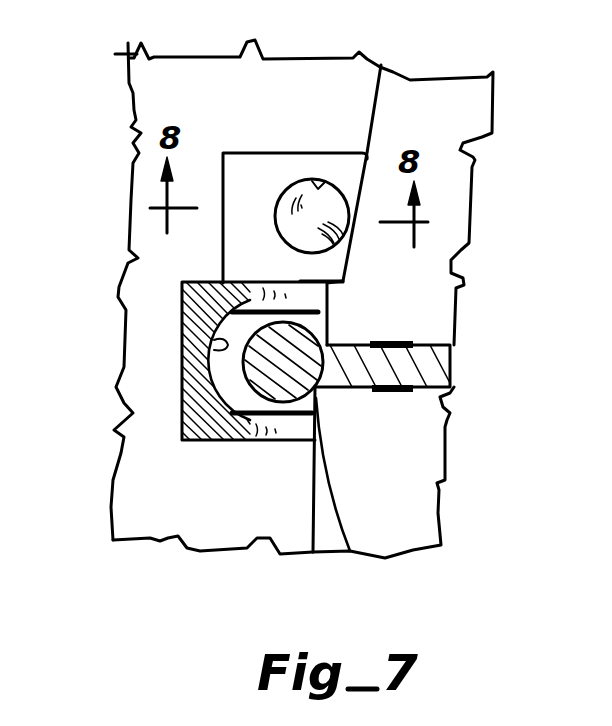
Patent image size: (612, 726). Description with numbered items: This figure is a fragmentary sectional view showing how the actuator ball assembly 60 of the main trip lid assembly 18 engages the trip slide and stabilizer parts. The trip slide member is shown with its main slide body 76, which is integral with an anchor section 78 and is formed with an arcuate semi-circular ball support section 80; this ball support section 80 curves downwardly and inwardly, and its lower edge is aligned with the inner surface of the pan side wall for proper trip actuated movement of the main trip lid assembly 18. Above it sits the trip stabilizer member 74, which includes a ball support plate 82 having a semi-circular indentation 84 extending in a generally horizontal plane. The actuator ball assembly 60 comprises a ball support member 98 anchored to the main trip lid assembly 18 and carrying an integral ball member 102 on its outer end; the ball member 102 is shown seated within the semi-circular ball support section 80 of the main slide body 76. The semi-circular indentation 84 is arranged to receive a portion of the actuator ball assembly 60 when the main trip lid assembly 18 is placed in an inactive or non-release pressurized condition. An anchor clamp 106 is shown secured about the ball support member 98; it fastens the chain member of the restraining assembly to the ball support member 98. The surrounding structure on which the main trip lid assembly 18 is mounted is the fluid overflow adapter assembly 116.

The main trip lid assembly 18 is at (397, 483).
The actuator ball assembly 60 is at (414, 331).
The trip stabilizer member 74 is at (245, 214).
The main slide body 76 is at (187, 440).
The anchor section 78 is at (287, 443).
The ball support section 80 is at (214, 340).
The ball support plate 82 is at (257, 168).
The semi-circular indentation 84 is at (317, 186).
The ball support member 98 is at (452, 368).
The ball member 102 is at (350, 551).
The anchor clamp 106 is at (393, 342).
The fluid overflow adapter assembly 116 is at (119, 389).